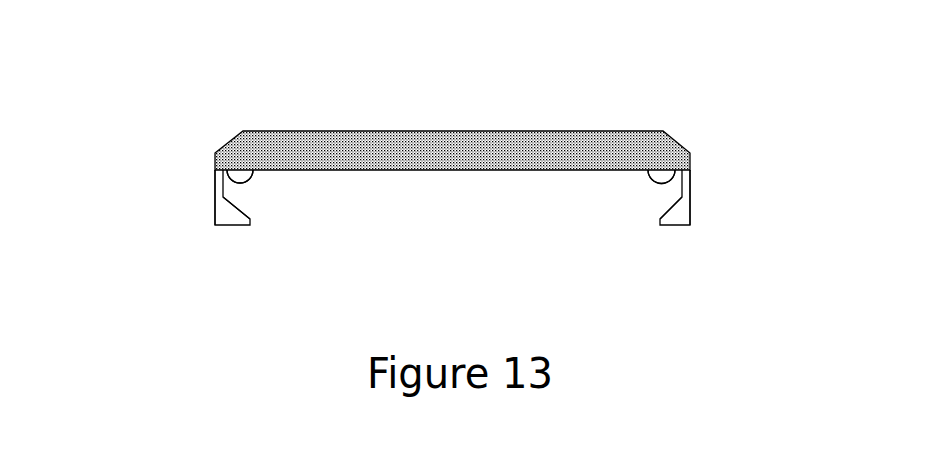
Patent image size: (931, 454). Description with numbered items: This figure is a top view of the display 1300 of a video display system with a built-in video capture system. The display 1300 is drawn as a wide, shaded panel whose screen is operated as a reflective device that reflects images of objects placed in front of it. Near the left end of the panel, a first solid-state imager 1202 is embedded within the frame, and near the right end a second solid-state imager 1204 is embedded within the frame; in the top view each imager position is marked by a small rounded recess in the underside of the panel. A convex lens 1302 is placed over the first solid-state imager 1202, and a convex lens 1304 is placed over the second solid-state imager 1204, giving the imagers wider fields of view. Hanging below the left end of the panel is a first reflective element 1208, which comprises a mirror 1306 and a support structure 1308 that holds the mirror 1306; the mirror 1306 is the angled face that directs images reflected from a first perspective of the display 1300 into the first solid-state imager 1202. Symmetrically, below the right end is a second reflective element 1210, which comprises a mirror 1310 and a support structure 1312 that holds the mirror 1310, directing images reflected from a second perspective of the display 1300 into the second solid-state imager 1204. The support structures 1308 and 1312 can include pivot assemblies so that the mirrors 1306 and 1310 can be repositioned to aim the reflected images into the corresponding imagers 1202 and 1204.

The display 1300 is at (622, 67).
The first reflective element 1208 is at (199, 217).
The second reflective element 1210 is at (702, 213).
The first solid-state imager 1202 is at (257, 179).
The second solid-state imager 1204 is at (645, 180).
The convex lens 1302 is at (232, 180).
The convex lens 1304 is at (660, 183).
The mirror 1306 is at (247, 218).
The mirror 1310 is at (657, 218).
The support structure 1308 is at (215, 185).
The support structure 1312 is at (692, 182).